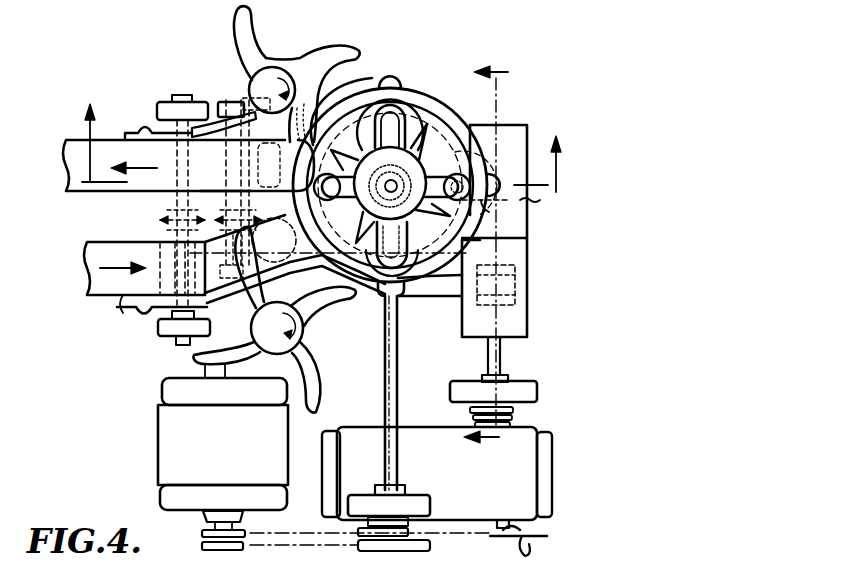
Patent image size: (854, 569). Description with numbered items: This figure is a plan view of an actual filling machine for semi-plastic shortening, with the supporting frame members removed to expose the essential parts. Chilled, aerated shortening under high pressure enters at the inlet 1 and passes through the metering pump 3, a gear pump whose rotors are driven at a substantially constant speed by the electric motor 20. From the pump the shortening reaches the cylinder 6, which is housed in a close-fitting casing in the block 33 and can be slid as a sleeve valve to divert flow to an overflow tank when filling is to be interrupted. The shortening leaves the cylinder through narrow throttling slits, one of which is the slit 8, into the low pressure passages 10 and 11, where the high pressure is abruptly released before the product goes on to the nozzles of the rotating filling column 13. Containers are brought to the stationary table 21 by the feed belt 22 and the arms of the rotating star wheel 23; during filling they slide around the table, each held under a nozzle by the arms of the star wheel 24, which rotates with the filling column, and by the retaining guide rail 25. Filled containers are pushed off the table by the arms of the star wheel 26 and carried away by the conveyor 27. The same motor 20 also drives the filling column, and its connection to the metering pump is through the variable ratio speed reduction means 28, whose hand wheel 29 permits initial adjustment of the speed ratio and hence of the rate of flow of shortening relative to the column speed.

The inlet 1 is at (407, 175).
The metering pump 3 is at (513, 282).
The cylinder 6 is at (322, 136).
The throttling slit 8 is at (486, 254).
The low pressure passage 10 is at (486, 207).
The low pressure passage 11 is at (496, 275).
The filling column 13 is at (341, 104).
The electric motor 20 is at (324, 464).
The stationary table 21 is at (436, 102).
The feed belt 22 is at (88, 278).
The rotating star wheel 23 is at (324, 342).
The star wheel 24 is at (413, 140).
The retaining guide rail 25 is at (123, 313).
The star wheel 26 is at (340, 47).
The conveyor 27 is at (167, 200).
The variable ratio speed reduction means 28 is at (483, 513).
The hand wheel 29 is at (527, 532).
The block 33 is at (540, 200).